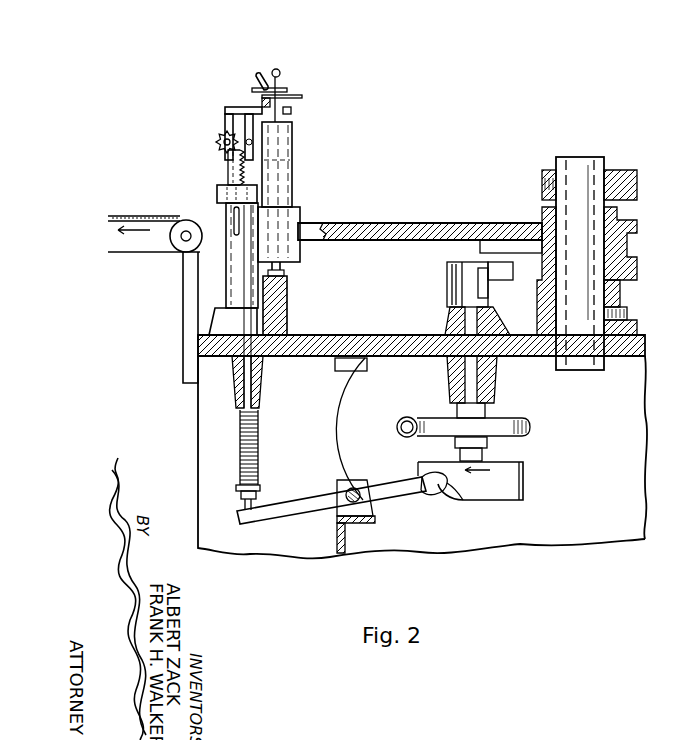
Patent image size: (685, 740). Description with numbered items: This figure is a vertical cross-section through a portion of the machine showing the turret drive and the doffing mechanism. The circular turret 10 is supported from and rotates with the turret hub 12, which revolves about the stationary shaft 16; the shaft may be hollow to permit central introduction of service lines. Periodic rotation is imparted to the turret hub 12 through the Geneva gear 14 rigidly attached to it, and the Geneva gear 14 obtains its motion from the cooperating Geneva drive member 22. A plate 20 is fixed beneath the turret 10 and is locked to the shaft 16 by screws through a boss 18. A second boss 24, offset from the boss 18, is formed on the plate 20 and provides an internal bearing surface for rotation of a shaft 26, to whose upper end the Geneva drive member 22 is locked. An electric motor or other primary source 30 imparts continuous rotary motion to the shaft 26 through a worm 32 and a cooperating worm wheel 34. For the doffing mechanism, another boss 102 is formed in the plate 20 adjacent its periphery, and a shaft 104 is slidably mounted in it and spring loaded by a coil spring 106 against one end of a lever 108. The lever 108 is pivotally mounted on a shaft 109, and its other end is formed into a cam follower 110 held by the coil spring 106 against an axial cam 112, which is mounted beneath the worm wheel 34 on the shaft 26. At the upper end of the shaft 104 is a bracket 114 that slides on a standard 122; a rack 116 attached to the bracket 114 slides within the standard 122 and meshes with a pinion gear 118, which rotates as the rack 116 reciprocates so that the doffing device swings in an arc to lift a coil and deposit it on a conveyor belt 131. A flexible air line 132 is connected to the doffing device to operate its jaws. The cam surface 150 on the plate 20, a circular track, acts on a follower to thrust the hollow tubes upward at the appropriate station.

The turret 10 is at (430, 222).
The turret hub 12 is at (542, 213).
The Geneva gear 14 is at (637, 282).
The stationary shaft 16 is at (580, 157).
The boss 18 is at (627, 325).
The plate 20 is at (640, 346).
The Geneva drive member 22 is at (447, 300).
The second boss 24 is at (447, 318).
The shaft 26 is at (495, 390).
The primary source 30 is at (375, 437).
The worm 32 is at (405, 416).
The worm wheel 34 is at (530, 428).
The boss 102 is at (262, 390).
The shaft 104 is at (247, 395).
The coil spring 106 is at (260, 433).
The lever 108 is at (280, 505).
The shaft 109 is at (338, 480).
The cam follower 110 is at (435, 493).
The axial cam 112 is at (520, 478).
The bracket 114 is at (217, 193).
The rack 116 is at (226, 165).
The pinion gear 118 is at (215, 141).
The standard 122 is at (226, 215).
The conveyor belt 131 is at (134, 222).
The flexible air line 132 is at (257, 73).
The cam surface 150 is at (290, 288).